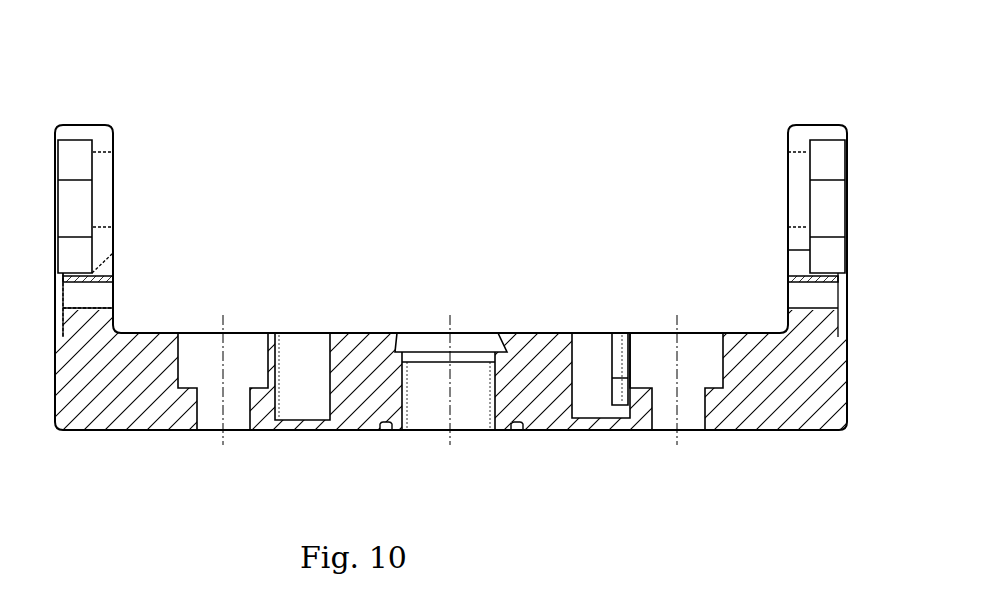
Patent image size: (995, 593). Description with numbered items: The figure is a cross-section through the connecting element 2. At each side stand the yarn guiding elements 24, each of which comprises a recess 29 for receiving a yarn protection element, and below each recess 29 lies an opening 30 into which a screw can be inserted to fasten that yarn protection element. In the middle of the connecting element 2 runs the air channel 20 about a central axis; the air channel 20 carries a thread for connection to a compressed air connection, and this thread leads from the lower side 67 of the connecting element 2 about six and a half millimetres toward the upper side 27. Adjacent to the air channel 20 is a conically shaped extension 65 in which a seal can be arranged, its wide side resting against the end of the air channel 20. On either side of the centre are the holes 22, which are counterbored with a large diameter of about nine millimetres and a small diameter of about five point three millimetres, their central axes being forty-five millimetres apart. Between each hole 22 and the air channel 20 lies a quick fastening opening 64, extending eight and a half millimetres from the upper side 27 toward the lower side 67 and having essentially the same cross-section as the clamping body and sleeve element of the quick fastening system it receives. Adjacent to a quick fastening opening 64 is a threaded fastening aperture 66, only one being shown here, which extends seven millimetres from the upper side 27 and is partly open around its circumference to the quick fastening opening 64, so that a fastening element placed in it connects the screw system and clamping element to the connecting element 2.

The connecting element 2 is at (212, 118).
The air channel 20 is at (423, 432).
The holes 22 is at (225, 432).
The yarn guiding elements 24 is at (75, 122).
The upper side 27 is at (363, 333).
The recess 29 is at (57, 199).
The openings 30 is at (113, 279).
The quick fastening opening 64 is at (295, 333).
The conically shaped extension 65 is at (437, 333).
The fastening aperture 66 is at (622, 333).
The lower side 67 is at (548, 432).